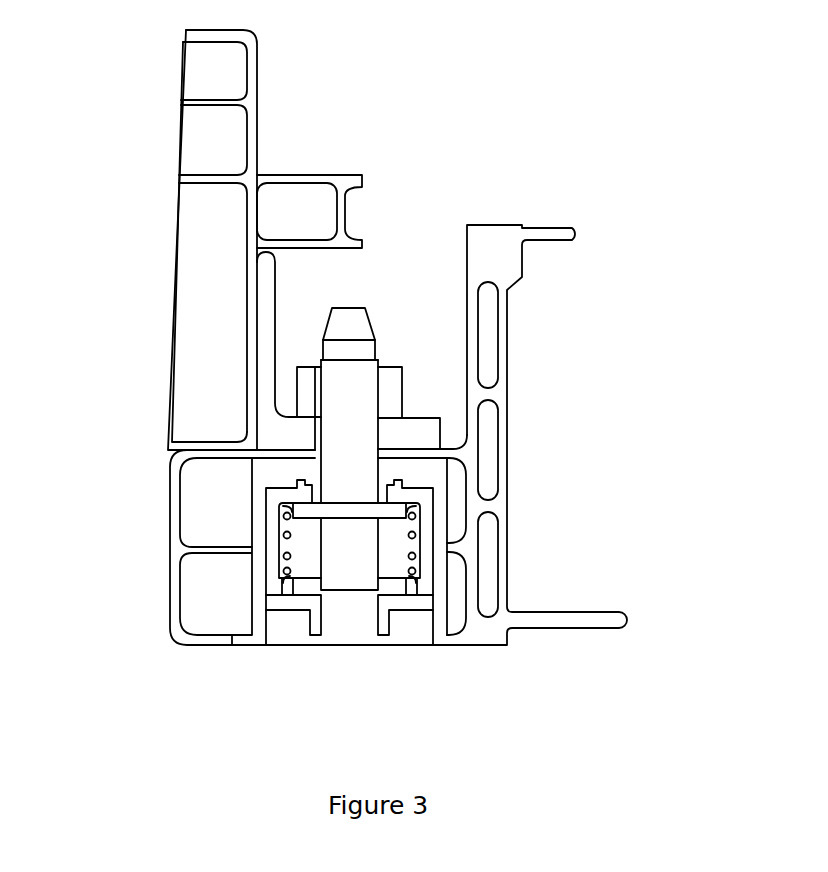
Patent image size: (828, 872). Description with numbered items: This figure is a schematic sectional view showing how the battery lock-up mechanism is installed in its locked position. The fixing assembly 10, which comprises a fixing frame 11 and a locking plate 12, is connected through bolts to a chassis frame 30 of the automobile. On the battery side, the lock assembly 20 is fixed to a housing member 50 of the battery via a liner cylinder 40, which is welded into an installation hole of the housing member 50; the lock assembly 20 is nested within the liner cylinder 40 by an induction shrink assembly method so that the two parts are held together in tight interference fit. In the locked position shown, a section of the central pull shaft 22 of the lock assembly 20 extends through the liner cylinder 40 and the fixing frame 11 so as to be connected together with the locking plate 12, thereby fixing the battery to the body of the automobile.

The fixing assembly 10 is at (268, 302).
The fixing frame 11 is at (410, 433).
The locking plate 12 is at (392, 390).
The lock assembly 20 is at (420, 537).
The central pull shaft 22 is at (347, 348).
The chassis frame 30 is at (250, 82).
The liner cylinder 40 is at (252, 640).
The housing member 50 is at (505, 398).